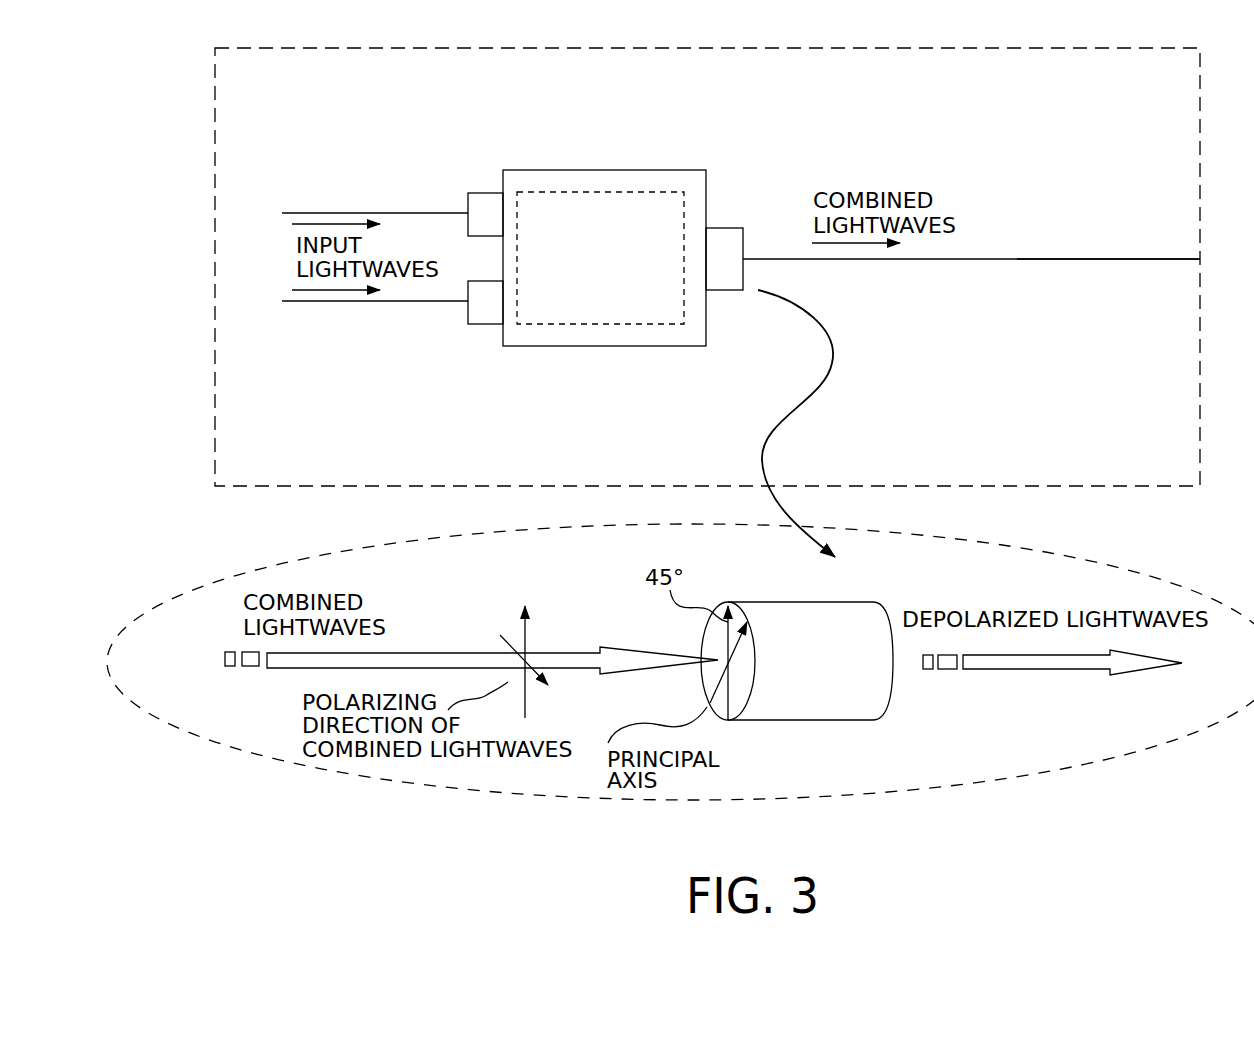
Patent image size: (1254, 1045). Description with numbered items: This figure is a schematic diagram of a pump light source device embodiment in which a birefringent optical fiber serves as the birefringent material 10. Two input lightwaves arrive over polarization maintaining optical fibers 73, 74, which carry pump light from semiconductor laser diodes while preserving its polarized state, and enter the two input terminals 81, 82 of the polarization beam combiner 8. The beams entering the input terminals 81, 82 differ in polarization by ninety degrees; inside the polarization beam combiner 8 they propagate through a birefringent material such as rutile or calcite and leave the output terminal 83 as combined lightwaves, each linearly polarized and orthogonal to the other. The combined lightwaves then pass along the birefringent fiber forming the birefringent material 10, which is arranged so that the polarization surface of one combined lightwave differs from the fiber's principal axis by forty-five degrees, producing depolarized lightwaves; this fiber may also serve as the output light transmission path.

The polarization maintaining optical fiber 73 is at (372, 213).
The polarization maintaining optical fiber 74 is at (372, 301).
The input terminal 81 is at (487, 213).
The input terminal 82 is at (487, 300).
The polarization beam combiner 8 is at (605, 307).
The output terminal 83 is at (723, 258).
The birefringent material 10 is at (968, 260).